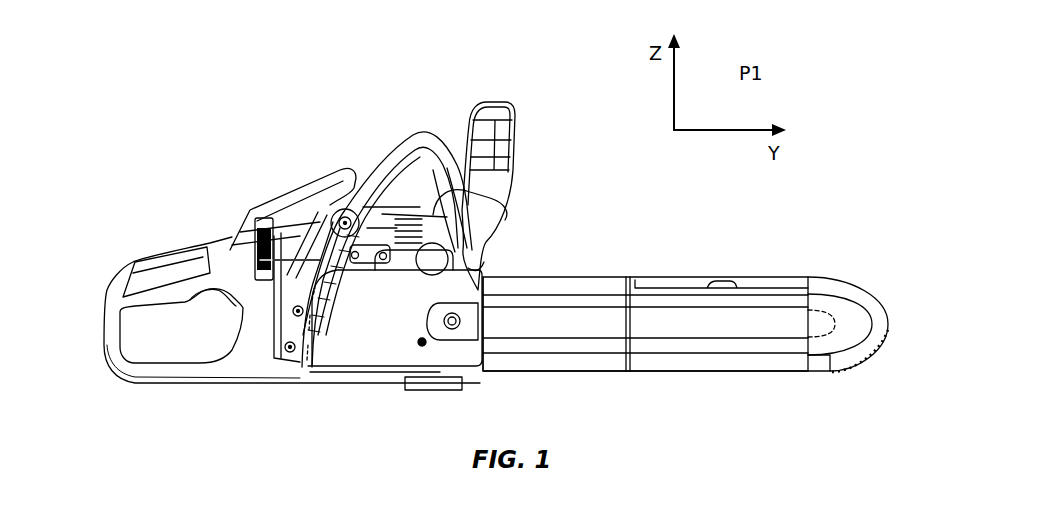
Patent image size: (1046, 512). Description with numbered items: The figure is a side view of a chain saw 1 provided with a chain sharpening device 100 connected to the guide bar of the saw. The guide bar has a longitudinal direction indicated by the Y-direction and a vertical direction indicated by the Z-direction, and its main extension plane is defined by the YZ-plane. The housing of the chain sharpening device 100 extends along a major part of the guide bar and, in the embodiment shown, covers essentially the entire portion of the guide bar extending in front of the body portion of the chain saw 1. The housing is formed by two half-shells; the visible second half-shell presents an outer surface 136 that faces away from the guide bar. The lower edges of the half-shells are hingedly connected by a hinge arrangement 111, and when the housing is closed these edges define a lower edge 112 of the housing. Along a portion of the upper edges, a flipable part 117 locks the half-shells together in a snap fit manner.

The chain saw 1 is at (176, 88).
The chain sharpening device 100 is at (630, 254).
The hinge arrangement 111 is at (660, 372).
The lower edge of the housing 112 is at (765, 372).
The flipable part 117 is at (755, 283).
The outer surface 136 is at (515, 316).